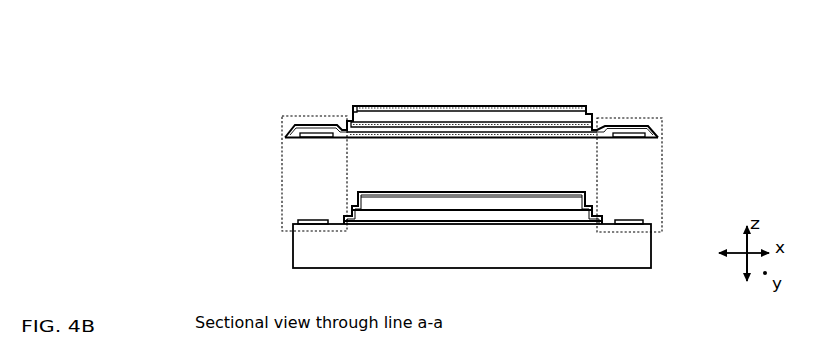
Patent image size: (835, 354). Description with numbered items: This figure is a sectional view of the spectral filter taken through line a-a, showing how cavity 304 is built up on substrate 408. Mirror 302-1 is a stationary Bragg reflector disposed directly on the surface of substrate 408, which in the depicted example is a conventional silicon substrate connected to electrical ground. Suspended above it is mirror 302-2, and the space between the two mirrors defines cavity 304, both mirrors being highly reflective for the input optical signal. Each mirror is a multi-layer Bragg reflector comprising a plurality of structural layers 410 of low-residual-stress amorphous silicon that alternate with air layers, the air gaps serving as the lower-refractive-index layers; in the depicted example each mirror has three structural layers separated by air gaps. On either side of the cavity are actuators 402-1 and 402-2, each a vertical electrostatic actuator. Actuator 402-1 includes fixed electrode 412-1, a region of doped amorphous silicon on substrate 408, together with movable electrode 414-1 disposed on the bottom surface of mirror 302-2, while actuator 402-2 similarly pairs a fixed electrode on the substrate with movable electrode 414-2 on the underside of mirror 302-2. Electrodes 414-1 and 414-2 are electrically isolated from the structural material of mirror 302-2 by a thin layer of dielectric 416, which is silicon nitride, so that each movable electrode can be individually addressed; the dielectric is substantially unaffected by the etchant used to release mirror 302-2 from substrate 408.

The cavity 304 is at (353, 53).
The structural layers 410 is at (471, 89).
The mirror 302-2 is at (545, 97).
The mirror 302-1 is at (545, 234).
The actuator 402-1 is at (315, 116).
The actuator 402-2 is at (632, 118).
The dielectric 416 is at (287, 134).
The movable electrode 414-1 is at (313, 139).
The movable electrode 414-2 is at (628, 142).
The fixed electrode 412-1 is at (315, 220).
The substrate 408 is at (433, 264).